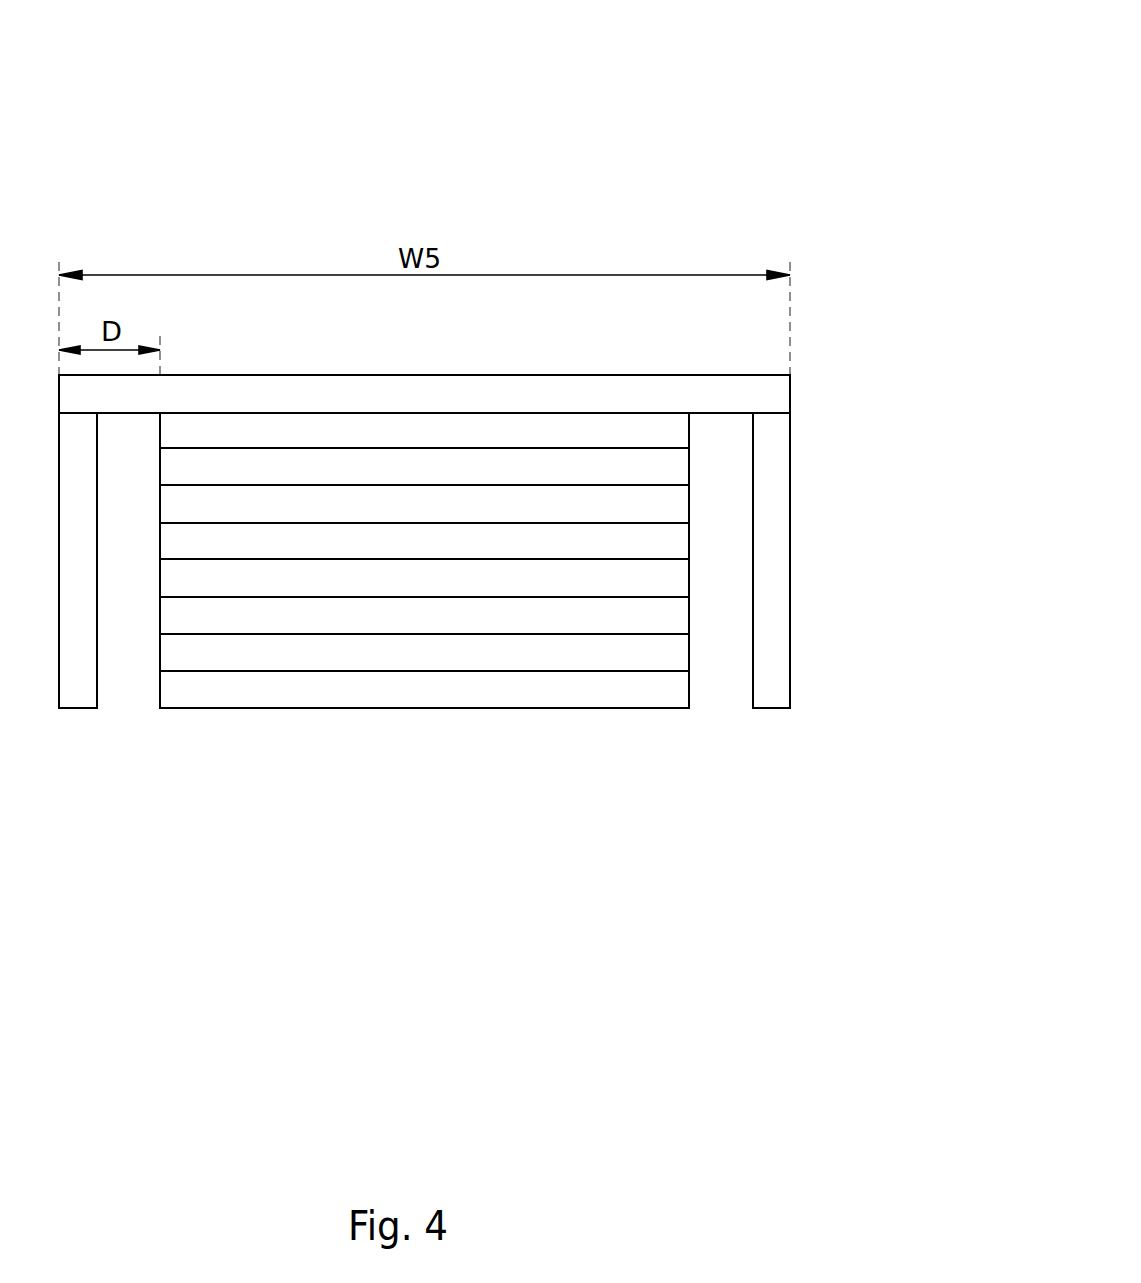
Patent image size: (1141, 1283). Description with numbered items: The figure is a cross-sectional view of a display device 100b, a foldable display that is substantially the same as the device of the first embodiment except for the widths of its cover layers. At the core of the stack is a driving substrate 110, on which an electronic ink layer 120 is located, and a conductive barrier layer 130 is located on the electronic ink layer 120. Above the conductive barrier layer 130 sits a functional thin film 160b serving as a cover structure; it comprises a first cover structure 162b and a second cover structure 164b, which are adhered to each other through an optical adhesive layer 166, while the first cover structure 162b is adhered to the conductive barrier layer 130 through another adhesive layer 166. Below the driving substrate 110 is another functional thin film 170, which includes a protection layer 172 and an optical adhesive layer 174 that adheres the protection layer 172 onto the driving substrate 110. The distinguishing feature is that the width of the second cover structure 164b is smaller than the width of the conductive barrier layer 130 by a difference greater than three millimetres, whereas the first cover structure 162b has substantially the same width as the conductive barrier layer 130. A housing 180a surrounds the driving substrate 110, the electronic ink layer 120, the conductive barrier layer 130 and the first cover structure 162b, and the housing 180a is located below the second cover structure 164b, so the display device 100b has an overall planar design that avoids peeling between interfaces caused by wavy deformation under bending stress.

The display device 100b is at (806, 38).
The second cover structure 164b is at (781, 393).
The optical adhesive layer 166 is at (675, 435).
The first cover structure 162b is at (675, 473).
The functional thin film 160b is at (855, 372).
The conductive barrier layer 130 is at (675, 546).
The electronic ink layer 120 is at (675, 582).
The driving substrate 110 is at (675, 618).
The optical adhesive layer 174 is at (675, 655).
The protection layer 172 is at (675, 697).
The functional thin film 170 is at (855, 634).
The housing 180a is at (77, 708).